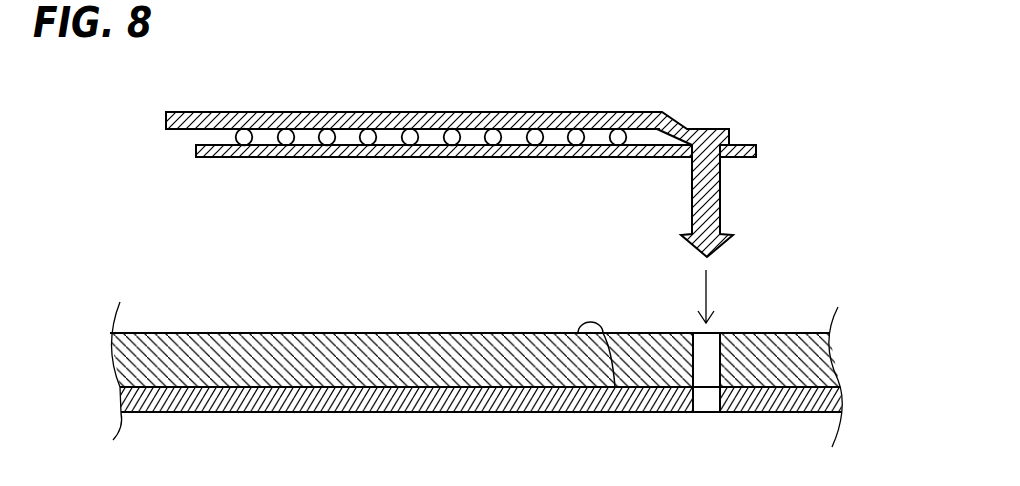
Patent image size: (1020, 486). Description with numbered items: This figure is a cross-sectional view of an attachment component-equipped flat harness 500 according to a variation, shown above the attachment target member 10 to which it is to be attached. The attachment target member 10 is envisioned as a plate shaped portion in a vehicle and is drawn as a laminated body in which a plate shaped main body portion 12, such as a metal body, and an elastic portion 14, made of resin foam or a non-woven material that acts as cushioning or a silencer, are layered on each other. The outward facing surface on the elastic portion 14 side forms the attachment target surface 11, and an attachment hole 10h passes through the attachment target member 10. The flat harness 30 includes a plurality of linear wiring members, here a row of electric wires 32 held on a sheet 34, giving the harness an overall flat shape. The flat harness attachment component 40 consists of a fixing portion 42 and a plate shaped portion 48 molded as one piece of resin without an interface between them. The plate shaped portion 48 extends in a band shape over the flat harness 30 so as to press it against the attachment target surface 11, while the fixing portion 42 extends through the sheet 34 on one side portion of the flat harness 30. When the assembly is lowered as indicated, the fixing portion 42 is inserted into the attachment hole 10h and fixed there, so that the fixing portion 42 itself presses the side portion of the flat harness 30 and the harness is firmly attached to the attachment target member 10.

The attachment component-equipped flat harness 500 is at (472, 146).
The plate shaped portion 48 is at (418, 111).
The electric wires 32 is at (328, 135).
The flat harness 30 is at (465, 136).
The sheet 34 is at (272, 158).
The flat harness attachment component 40 is at (718, 172).
The fixing portion 42 is at (723, 190).
The attachment target member 10 is at (502, 378).
The elastic portion 14 is at (822, 358).
The plate shaped main body portion 12 is at (843, 398).
The attachment hole 10h is at (711, 393).
The attachment target surface 11 is at (615, 387).